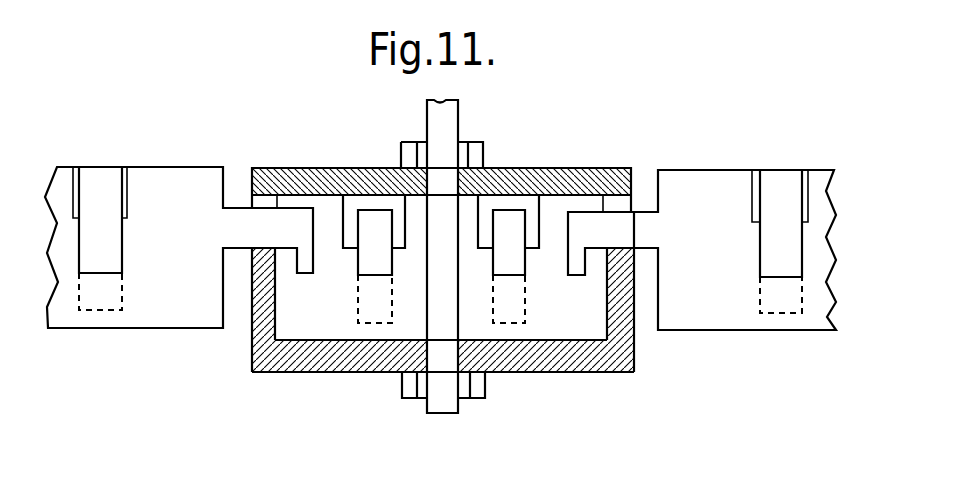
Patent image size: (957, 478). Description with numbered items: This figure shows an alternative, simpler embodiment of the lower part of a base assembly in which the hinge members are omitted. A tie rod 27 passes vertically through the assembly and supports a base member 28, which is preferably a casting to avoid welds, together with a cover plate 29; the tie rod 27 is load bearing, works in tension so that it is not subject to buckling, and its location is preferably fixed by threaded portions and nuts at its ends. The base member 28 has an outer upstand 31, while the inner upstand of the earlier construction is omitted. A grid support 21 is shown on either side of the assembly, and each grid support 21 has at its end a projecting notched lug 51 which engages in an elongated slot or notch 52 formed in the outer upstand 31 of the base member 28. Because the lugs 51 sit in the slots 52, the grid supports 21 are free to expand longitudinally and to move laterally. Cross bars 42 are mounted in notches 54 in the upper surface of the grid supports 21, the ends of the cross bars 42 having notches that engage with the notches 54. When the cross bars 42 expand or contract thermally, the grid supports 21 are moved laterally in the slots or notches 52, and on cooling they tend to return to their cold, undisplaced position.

The grid support 21 is at (180, 315).
The tie rod 27 is at (447, 123).
The base member 28 is at (315, 360).
The cover plate 29 is at (560, 178).
The outer upstand 31 is at (253, 346).
The cross bar 42 is at (100, 189).
The projecting notched lug 51 is at (287, 230).
The elongated slot or notch 52 is at (343, 210).
The notch 54 is at (128, 187).